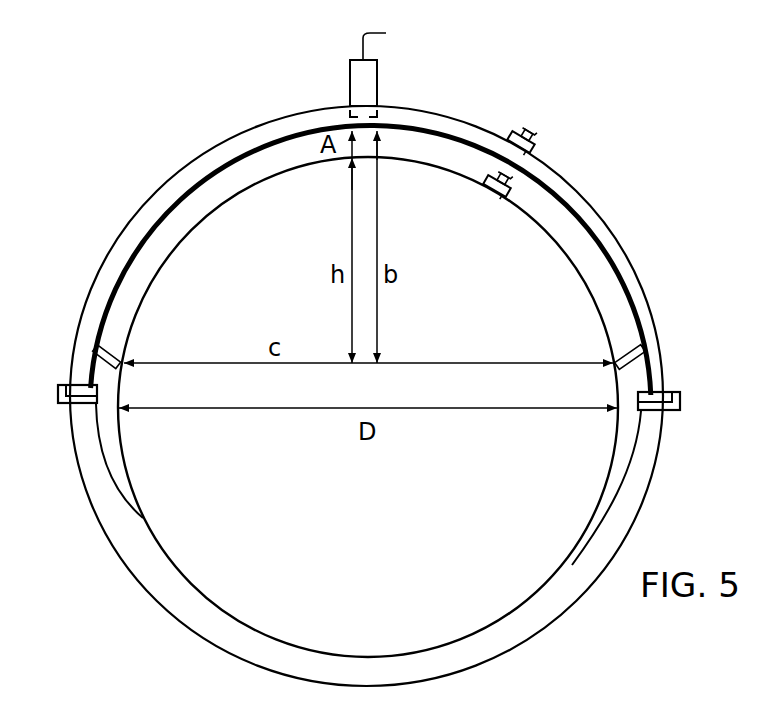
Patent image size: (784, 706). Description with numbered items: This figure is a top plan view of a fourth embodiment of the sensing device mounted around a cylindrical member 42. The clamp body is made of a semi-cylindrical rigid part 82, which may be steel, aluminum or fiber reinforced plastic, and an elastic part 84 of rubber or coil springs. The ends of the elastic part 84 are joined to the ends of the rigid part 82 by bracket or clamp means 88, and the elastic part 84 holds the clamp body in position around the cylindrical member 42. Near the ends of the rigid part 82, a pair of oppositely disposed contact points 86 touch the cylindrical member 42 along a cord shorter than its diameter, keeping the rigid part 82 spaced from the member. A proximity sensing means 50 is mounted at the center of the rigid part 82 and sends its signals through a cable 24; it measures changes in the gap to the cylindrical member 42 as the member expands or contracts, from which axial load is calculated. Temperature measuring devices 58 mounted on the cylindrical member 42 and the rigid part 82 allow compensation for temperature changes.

The cable 24 is at (392, 41).
The cylindrical member 42 is at (605, 465).
The proximity sensing means 50 is at (378, 80).
The temperature measuring devices 58 is at (535, 141).
The rigid part 82 is at (612, 237).
The elastic part 84 is at (650, 470).
The contact points 86 is at (100, 352).
The connecting means 88 is at (57, 390).